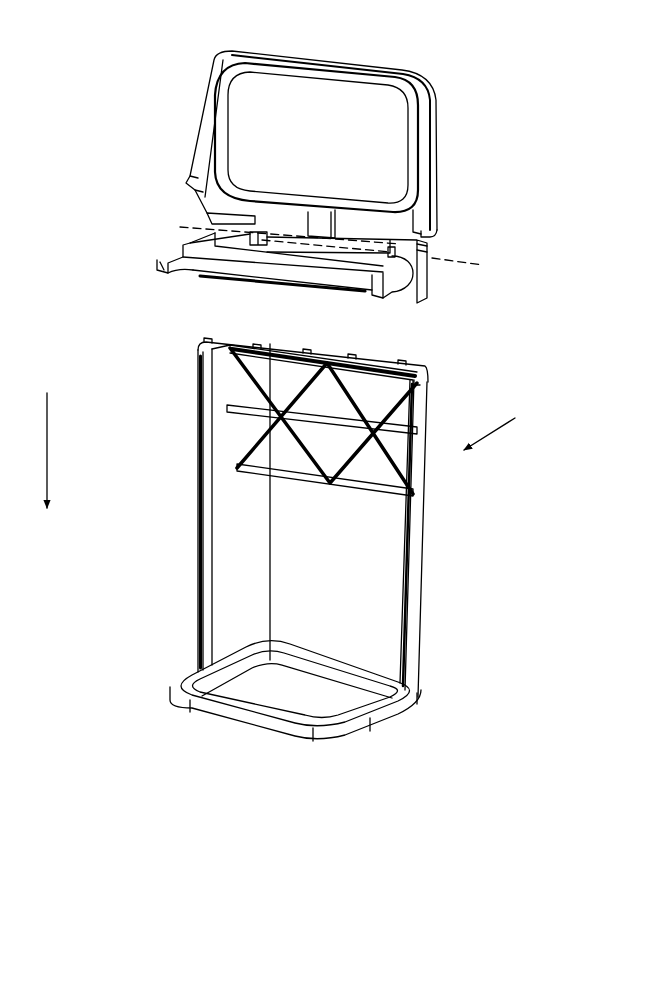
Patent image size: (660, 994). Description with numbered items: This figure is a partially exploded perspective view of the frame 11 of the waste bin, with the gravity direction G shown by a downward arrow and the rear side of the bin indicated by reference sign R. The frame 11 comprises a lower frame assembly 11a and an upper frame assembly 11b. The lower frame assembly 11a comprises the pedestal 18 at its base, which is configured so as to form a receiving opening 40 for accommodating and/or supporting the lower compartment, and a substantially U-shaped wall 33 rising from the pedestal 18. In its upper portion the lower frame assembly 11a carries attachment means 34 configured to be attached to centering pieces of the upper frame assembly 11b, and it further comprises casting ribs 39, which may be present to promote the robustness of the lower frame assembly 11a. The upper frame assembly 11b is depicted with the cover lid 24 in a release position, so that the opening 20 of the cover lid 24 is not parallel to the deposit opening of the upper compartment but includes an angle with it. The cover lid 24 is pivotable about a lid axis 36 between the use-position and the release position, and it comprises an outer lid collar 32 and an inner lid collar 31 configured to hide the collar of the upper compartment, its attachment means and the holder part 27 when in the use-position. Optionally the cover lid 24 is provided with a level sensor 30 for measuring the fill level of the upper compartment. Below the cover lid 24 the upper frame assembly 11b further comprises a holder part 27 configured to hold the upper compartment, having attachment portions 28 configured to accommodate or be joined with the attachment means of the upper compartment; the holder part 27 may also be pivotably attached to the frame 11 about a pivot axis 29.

The frame 11 is at (580, 665).
The lower frame assembly 11a is at (182, 640).
The upper frame assembly 11b is at (163, 138).
The pedestal 18 is at (385, 717).
The opening 20 is at (308, 120).
The cover lid 24 is at (435, 96).
The holder part 27 is at (388, 298).
The attachment portions 28 is at (185, 258).
The pivot axis 29 is at (448, 264).
The level sensor 30 is at (347, 215).
The inner lid collar 31 is at (222, 132).
The outer lid collar 32 is at (193, 177).
The U-shaped wall 33 is at (207, 612).
The attachment means 34 is at (260, 338).
The lid axis 36 is at (440, 248).
The casting ribs 39 is at (278, 480).
The receiving opening 40 is at (279, 691).
The gravity direction G is at (48, 426).
The rear side R is at (497, 423).